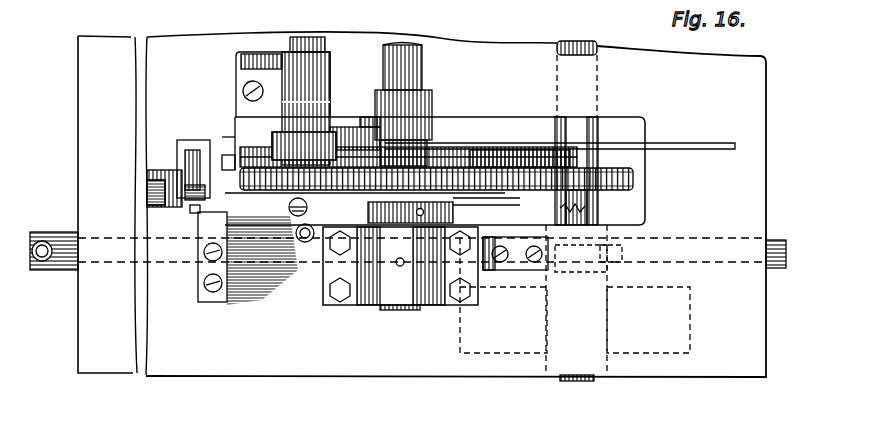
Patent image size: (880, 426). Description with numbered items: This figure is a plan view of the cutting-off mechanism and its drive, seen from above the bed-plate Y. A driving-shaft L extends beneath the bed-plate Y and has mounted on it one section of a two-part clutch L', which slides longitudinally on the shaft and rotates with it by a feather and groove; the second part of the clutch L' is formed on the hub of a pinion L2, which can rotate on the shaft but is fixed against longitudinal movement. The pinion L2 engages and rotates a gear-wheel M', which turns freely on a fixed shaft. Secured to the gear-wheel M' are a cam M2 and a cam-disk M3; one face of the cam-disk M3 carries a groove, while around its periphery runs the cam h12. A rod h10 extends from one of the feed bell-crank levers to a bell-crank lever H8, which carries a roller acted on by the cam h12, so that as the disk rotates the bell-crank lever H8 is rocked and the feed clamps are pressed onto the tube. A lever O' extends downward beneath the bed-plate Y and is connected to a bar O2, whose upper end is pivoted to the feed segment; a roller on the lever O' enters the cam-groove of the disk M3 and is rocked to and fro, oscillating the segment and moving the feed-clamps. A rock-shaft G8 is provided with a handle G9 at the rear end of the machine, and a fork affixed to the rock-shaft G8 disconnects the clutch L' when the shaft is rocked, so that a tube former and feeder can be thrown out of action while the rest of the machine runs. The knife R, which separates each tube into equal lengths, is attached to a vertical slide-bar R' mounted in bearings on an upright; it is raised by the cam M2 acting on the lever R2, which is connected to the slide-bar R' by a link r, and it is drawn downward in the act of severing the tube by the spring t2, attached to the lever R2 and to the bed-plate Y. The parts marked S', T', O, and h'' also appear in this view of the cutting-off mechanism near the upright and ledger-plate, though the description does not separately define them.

The link r is at (148, 182).
The knife R is at (164, 173).
The vertical slide-bar R' is at (180, 221).
The lever R2 is at (262, 260).
The plate S' is at (212, 257).
The lever T' is at (188, 155).
The gear-wheel M' is at (212, 152).
The cam M2 is at (455, 206).
The cam-disk M3 is at (487, 150).
The post O is at (291, 101).
The lever O' is at (370, 111).
The bar O2 is at (527, 5).
The bell-crank lever H8 is at (348, 116).
The pinion h'' is at (400, 137).
The cam h12 is at (515, 152).
The rod h10 is at (560, 136).
The driving-shaft L is at (577, 218).
The two-part clutch L' is at (590, 231).
The pinion L2 is at (636, 180).
The bed-plate Y is at (709, 213).
The rock-shaft G8 is at (783, 245).
The handle G9 is at (54, 238).
The spring t2 is at (290, 208).